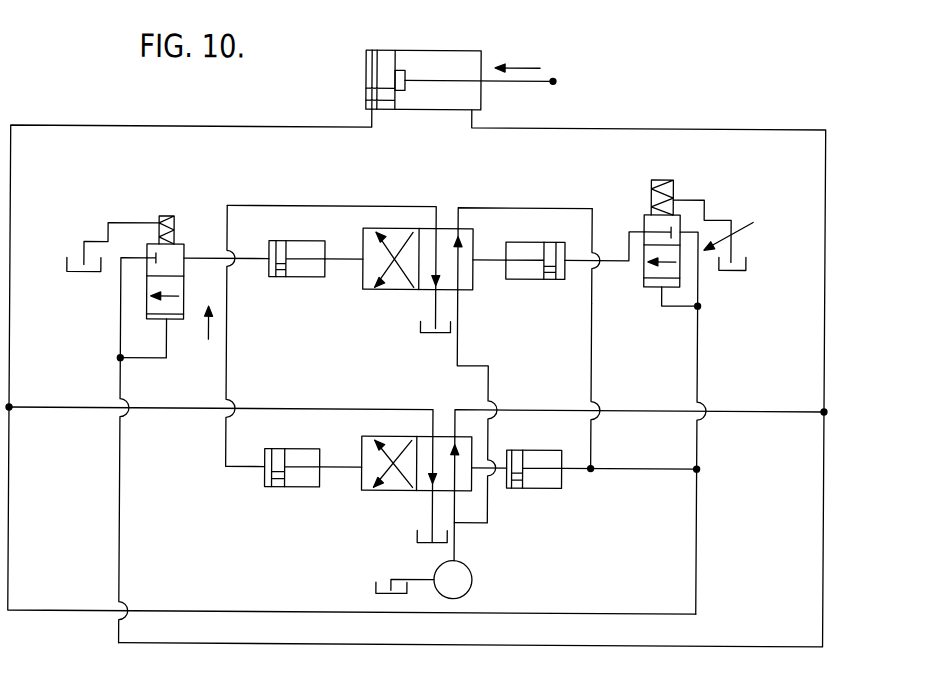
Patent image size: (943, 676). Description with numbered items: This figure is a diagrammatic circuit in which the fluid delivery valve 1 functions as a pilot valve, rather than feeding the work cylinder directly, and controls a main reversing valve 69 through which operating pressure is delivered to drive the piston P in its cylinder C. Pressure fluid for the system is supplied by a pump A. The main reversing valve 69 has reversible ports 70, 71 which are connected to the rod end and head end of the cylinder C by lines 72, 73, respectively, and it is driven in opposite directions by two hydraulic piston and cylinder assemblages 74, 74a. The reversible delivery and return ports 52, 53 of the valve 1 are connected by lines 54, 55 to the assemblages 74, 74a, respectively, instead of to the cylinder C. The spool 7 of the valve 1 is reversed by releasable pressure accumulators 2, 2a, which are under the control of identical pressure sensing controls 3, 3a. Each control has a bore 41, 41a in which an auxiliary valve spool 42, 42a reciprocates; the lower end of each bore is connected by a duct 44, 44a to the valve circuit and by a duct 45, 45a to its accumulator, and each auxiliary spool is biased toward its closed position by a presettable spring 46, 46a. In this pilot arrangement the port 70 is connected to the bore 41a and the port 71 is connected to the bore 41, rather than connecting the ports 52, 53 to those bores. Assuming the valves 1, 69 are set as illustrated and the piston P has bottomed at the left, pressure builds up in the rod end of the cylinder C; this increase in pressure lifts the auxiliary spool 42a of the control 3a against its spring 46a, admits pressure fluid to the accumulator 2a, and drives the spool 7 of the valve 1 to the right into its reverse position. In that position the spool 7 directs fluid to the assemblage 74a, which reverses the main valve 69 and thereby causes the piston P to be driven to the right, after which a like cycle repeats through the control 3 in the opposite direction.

The fluid delivery valve 1 is at (382, 290).
The releasable pressure accumulator 2 is at (527, 276).
The releasable pressure accumulator 2a is at (304, 275).
The pressure sensing control 3 is at (737, 230).
The pressure sensing control 3a is at (194, 329).
The spool 7 is at (412, 289).
The bore 41 is at (652, 285).
The bore 41a is at (147, 314).
The auxiliary valve spool 42 is at (680, 273).
The auxiliary valve spool 42a is at (186, 235).
The duct 44 is at (692, 305).
The duct 44a is at (138, 357).
The duct 45 is at (591, 222).
The duct 45a is at (207, 259).
The spring 46 is at (673, 190).
The spring 46a is at (164, 211).
The reversible delivery and return port 52 is at (455, 212).
The reversible delivery and return port 53 is at (436, 214).
The line 54 is at (591, 319).
The line 55 is at (226, 351).
The main reversing valve 69 is at (392, 492).
The reversible port 70 is at (454, 432).
The reversible port 71 is at (433, 433).
The line 72 is at (826, 135).
The line 73 is at (9, 130).
The hydraulic piston and cylinder assemblage 74 is at (545, 486).
The hydraulic piston and cylinder assemblage 74a is at (296, 486).
The pump A is at (470, 570).
The cylinder C is at (447, 48).
The piston P is at (394, 60).